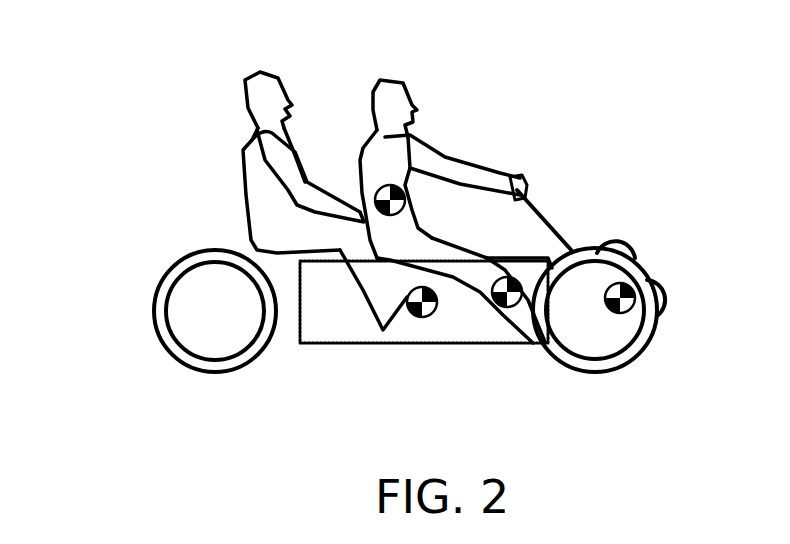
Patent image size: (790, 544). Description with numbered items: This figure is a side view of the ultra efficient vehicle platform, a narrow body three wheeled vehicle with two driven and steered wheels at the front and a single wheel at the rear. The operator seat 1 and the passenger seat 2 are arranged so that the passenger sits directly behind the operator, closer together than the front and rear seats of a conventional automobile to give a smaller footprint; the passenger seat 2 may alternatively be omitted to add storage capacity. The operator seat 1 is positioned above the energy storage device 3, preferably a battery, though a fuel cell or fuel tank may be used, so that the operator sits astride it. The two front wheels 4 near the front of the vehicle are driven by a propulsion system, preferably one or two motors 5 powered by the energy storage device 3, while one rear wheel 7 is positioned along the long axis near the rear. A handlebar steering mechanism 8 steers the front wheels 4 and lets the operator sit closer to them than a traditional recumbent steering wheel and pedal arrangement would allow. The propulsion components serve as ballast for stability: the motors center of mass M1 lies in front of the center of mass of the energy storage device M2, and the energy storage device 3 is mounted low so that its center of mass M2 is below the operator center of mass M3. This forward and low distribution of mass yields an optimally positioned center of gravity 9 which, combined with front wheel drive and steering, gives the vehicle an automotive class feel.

The operator seat 1 is at (382, 257).
The passenger seat 2 is at (272, 254).
The energy storage device 3 is at (451, 305).
The front wheels 4 is at (585, 333).
The motors 5 is at (630, 255).
The rear wheel 7 is at (183, 307).
The handlebar steering mechanism 8 is at (517, 190).
The center of gravity 9 is at (500, 308).
The motors center of mass M1 is at (622, 282).
The center of mass of the energy storage device M2 is at (431, 290).
The operator center of mass M3 is at (400, 192).